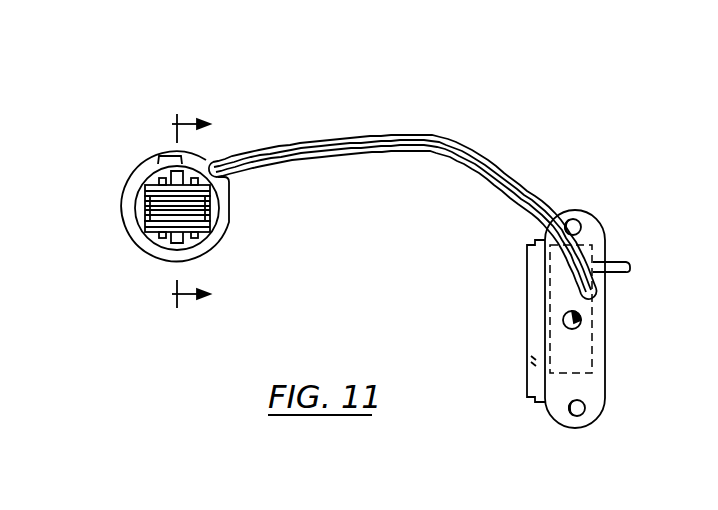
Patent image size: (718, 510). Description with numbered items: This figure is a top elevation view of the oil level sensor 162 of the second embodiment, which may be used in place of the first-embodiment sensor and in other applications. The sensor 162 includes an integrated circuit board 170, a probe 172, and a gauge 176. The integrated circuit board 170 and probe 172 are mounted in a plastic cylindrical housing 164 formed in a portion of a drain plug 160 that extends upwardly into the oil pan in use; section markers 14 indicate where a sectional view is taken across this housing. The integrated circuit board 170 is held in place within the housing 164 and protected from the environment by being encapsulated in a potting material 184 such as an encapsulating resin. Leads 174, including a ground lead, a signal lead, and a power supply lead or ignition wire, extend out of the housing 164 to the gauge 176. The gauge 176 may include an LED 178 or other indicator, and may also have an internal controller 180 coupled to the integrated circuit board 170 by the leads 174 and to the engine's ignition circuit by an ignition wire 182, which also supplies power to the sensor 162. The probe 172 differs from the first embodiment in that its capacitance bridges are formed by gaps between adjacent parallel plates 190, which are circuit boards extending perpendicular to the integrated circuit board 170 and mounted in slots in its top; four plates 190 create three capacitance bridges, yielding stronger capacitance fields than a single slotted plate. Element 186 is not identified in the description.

The section line 14 is at (208, 208).
The drain plug 160 is at (232, 210).
The sensor 162 is at (484, 140).
The housing 164 is at (152, 168).
The integrated circuit board 170 is at (215, 160).
The probe 172 is at (210, 234).
The leads 174 is at (372, 134).
The gauge 176 is at (607, 406).
The LED 178 is at (578, 324).
The internal controller 180 is at (590, 245).
The ignition wire 182 is at (627, 258).
The potting material 184 is at (168, 240).
The lower plate 186 is at (145, 232).
The parallel plates 190 is at (146, 186).